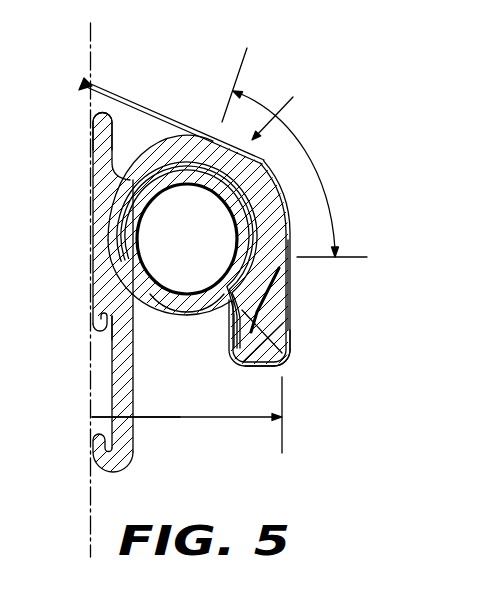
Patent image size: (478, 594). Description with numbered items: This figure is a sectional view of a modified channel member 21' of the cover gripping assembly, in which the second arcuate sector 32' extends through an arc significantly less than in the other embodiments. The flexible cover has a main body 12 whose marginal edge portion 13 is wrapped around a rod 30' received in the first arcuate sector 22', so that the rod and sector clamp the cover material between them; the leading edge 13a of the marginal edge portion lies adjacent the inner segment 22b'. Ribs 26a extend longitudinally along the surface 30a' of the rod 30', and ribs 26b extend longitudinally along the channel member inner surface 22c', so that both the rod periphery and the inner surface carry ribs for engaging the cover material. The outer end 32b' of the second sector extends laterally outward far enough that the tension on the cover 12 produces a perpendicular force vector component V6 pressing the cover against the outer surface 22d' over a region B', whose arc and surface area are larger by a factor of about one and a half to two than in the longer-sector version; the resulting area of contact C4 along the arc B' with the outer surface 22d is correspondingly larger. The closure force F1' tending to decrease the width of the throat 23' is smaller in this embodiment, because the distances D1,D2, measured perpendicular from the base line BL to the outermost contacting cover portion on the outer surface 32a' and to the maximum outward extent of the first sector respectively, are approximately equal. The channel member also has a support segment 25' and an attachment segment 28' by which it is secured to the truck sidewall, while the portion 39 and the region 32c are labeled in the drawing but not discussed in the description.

The weatherstrip assembly 21' is at (39, 109).
The cover main body 12 is at (164, 111).
The cover layer 22' is at (160, 138).
The area of contact C4 is at (254, 133).
The perpendicular force vector component V6 is at (293, 97).
The marginal edge portion 13 is at (152, 158).
The outer surface 22d' is at (301, 239).
The upper hook portion 25' is at (68, 146).
The contact region arc B' is at (298, 174).
The ribs 26b is at (97, 183).
The channel member inner surface 22c' is at (328, 225).
The ribs 26a is at (160, 196).
The cover portion 22b' is at (103, 266).
The rod 30' is at (187, 239).
The base line BL is at (82, 278).
The leading edge 13a is at (163, 297).
The outer surface 22d is at (326, 285).
The hinge portion 39 is at (248, 314).
The throat 23' is at (148, 316).
The lip portion 32c is at (292, 333).
The rod surface 30a' is at (187, 355).
The closure force F1' is at (187, 415).
The outer end 32b' is at (320, 375).
The lip portion 32a' is at (308, 396).
The lower hook portion 28' is at (84, 428).
The second arcuate sector 32' is at (286, 379).
The distances D1,D2 is at (185, 420).